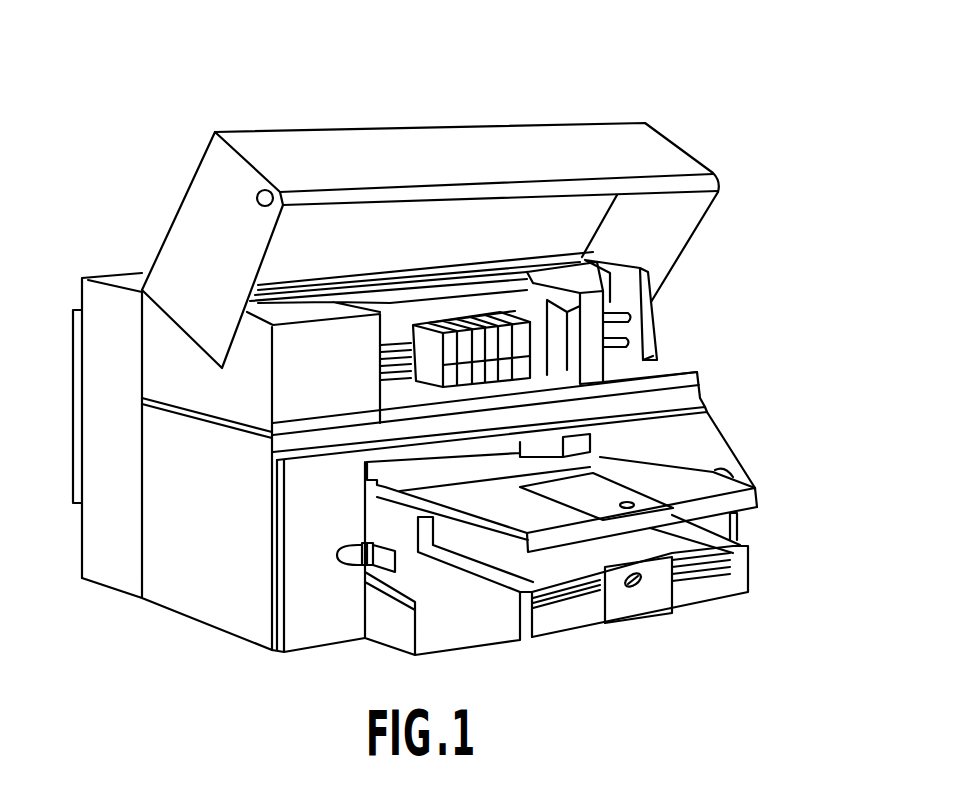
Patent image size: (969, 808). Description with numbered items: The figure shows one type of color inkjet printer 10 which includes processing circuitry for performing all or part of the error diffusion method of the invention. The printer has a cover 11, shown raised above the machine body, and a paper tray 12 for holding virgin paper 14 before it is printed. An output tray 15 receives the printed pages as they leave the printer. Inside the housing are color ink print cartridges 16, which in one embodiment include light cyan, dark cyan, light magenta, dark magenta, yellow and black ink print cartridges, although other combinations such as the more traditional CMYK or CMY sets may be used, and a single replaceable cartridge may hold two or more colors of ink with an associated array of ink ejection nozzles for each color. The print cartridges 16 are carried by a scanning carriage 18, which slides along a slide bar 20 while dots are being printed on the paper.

The color inkjet printer 10 is at (554, 81).
The cover 11 is at (177, 208).
The paper tray 12 is at (545, 623).
The virgin paper 14 is at (727, 562).
The output tray 15 is at (740, 475).
The color ink print cartridges 16 is at (433, 358).
The scanning carriage 18 is at (418, 376).
The slide bar 20 is at (615, 340).